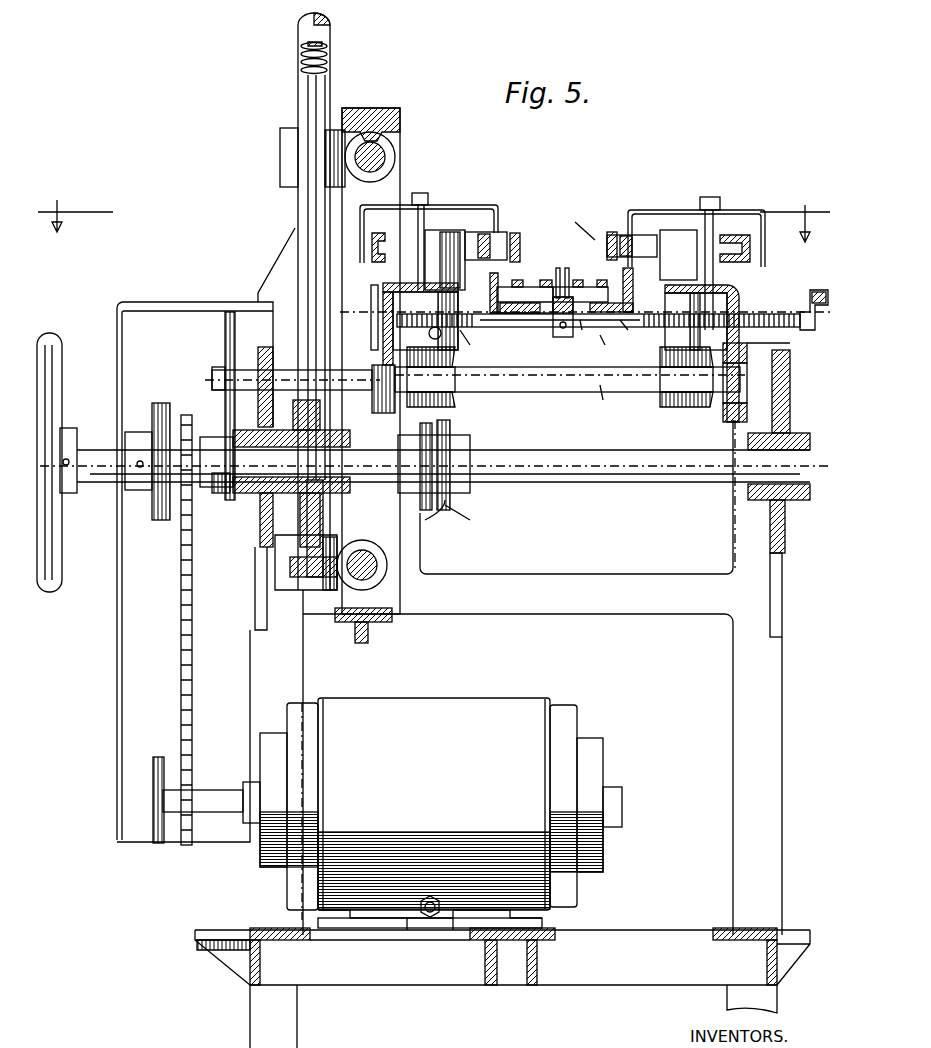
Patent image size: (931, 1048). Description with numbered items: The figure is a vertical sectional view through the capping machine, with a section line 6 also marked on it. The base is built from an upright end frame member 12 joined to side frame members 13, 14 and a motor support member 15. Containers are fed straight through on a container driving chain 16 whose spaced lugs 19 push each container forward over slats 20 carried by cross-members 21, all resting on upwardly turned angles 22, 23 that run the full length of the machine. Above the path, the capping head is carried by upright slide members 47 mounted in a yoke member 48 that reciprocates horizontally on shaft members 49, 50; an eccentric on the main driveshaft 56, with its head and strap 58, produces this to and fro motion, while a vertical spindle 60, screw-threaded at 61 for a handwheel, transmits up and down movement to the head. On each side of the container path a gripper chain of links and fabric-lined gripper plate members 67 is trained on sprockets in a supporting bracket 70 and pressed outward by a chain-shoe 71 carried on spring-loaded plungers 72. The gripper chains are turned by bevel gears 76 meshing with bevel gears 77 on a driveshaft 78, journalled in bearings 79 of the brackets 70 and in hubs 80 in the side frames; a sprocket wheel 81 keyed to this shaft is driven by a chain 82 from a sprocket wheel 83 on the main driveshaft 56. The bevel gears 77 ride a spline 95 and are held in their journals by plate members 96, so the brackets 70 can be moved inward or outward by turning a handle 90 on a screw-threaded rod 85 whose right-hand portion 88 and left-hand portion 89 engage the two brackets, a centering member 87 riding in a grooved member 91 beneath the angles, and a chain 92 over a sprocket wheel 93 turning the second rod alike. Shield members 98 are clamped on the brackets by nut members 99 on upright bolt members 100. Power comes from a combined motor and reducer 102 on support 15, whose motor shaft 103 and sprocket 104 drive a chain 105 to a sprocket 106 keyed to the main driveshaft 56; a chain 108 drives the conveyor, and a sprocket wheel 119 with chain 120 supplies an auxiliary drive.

The section line 6- 6 is at (434, 208).
The upright end frame member 12 is at (512, 605).
The side frame member 13 is at (786, 540).
The side frame member 14 is at (258, 540).
The motor support member 15 is at (392, 985).
The container driving chain 16 is at (567, 268).
The spaced lugs 19 is at (558, 268).
The slats 20 is at (520, 280).
The cross-members 21 is at (510, 305).
The upwardly turned angle 22 is at (470, 318).
The upwardly turned angle 23 is at (633, 334).
The upright slide member 47 is at (322, 33).
The yoke member 48 is at (392, 361).
The shaft member 49 is at (385, 160).
The shaft member 50 is at (375, 570).
The main driveshaft 56 is at (690, 482).
The strap 58 is at (305, 600).
The vertical spindle 60 is at (298, 190).
The screw-threaded upper end 61 is at (300, 60).
The gripper plate members 67 is at (573, 221).
The supporting bracket 70 is at (390, 288).
The chain-shoe 71 is at (485, 240).
The plungers 72 is at (660, 235).
The bevel gears 76 is at (420, 395).
The bevel gears 77 is at (440, 430).
The driveshaft 78 is at (602, 403).
The bearings 79 is at (385, 470).
The hubs 80 is at (260, 385).
The sprocket wheel 81 is at (228, 340).
The chain 82 is at (228, 355).
The sprocket wheel 83 is at (226, 500).
The screw-threaded rod 85 is at (610, 350).
The centering member 87 is at (560, 338).
The screw-threaded portion 88 is at (650, 312).
The screw-threaded portion 89 is at (481, 348).
The handle 90 is at (820, 290).
The grooved member 91 is at (587, 334).
The chain 92 is at (375, 328).
The sprocket wheel 93 is at (375, 308).
The spline 95 is at (520, 392).
The plate members 96 is at (750, 350).
The shield members 98 is at (490, 205).
The nut members 99 is at (420, 200).
The upright bolt members 100 is at (424, 215).
The combined motor and reducer 102 is at (545, 870).
The motor shaft 103 is at (213, 795).
The sprocket 104 is at (190, 830).
The chain 105 is at (192, 738).
The sprocket 106 is at (172, 520).
The chain 108 is at (425, 520).
The sprocket wheel 119 is at (450, 470).
The chain 120 is at (474, 520).